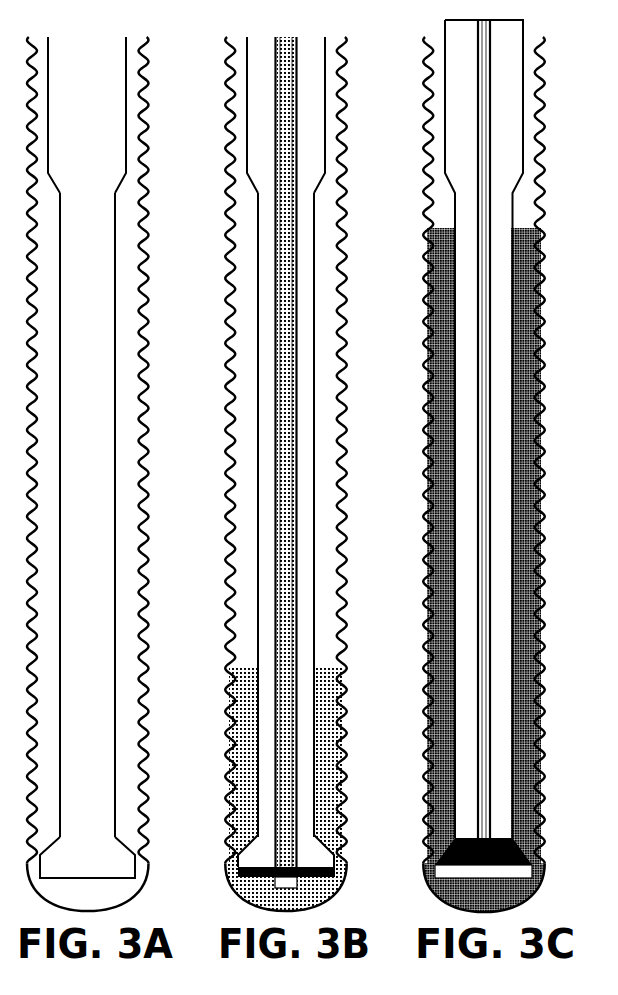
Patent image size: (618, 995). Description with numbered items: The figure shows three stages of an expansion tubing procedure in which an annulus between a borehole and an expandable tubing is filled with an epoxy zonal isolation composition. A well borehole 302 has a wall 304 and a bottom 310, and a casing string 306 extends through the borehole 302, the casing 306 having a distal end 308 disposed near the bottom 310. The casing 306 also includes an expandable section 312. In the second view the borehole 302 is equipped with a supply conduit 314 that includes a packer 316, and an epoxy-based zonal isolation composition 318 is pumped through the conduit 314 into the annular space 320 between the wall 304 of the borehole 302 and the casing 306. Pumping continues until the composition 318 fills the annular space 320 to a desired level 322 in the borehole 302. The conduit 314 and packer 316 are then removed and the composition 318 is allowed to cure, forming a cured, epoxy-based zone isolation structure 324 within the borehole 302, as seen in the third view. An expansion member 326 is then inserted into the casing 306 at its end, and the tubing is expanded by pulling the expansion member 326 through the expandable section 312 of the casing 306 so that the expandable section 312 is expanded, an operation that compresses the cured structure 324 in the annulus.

In FIG. 3A, the well borehole 302 is at (159, 217).
In FIG. 3B, the well borehole 302 is at (212, 217).
In FIG. 3C, the well borehole 302 is at (556, 86).
In FIG. 3A, the wall 304 is at (150, 252).
In FIG. 3B, the wall 304 is at (224, 252).
In FIG. 3C, the wall 304 is at (541, 122).
In FIG. 3A, the casing string 306 is at (128, 118).
In FIG. 3B, the casing string 306 is at (246, 118).
In FIG. 3C, the casing string 306 is at (514, 212).
In FIG. 3A, the distal end 308 is at (113, 883).
In FIG. 3B, the distal end 308 is at (242, 883).
In FIG. 3A, the bottom 310 is at (82, 919).
In FIG. 3B, the bottom 310 is at (280, 916).
In FIG. 3A, the expandable section 312 is at (117, 426).
In FIG. 3B, the expandable section 312 is at (257, 428).
In FIG. 3B, the supply conduit 314 is at (273, 558).
In FIG. 3B, the packer 316 is at (336, 870).
In FIG. 3B, the epoxy-based zonal isolation composition 318 is at (284, 715).
In FIG. 3A, the annular space 320 is at (130, 337).
In FIG. 3B, the annular space 320 is at (245, 337).
In FIG. 3C, the desired level 322 is at (431, 220).
In FIG. 3C, the cured, epoxy-based zone isolation structure 324 is at (438, 437).
In FIG. 3C, the expansion member 326 is at (617, 437).